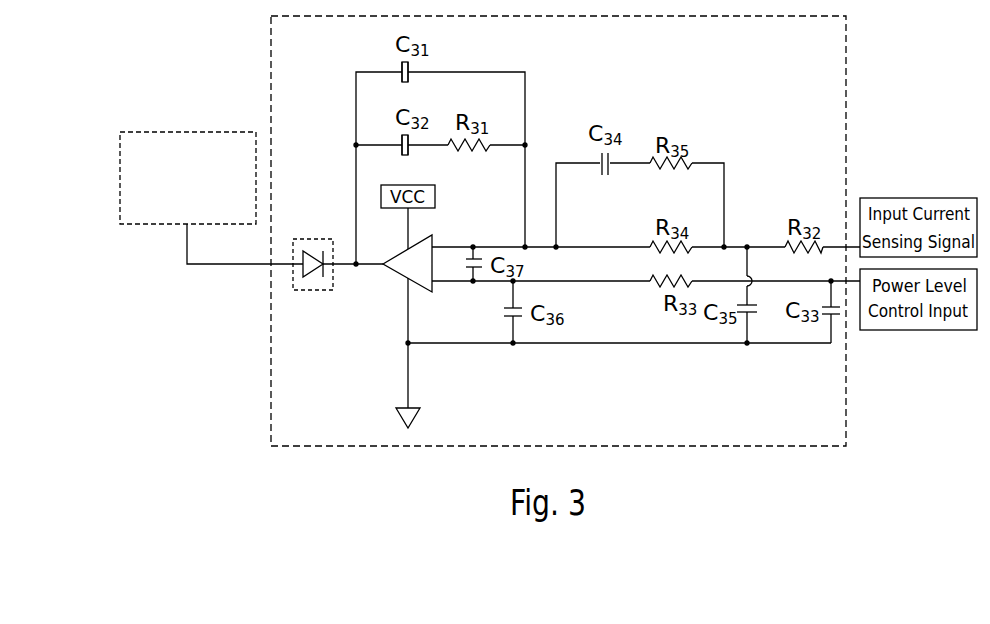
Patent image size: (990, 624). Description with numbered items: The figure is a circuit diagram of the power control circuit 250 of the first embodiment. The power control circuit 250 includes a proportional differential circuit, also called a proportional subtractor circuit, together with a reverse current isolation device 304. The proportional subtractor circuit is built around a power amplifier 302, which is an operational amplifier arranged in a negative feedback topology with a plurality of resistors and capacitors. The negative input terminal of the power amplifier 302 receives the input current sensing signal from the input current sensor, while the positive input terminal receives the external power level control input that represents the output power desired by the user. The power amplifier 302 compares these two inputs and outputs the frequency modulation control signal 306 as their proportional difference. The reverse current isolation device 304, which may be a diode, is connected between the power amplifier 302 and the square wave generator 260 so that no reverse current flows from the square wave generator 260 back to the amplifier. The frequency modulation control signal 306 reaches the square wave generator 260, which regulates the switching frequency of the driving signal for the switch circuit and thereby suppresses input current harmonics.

The power control circuit 250 is at (846, 97).
The square wave generator 260 is at (185, 130).
The power amplifier 302 is at (402, 276).
The reverse current isolation device 304 is at (312, 292).
The frequency modulation control signal 306 is at (348, 260).